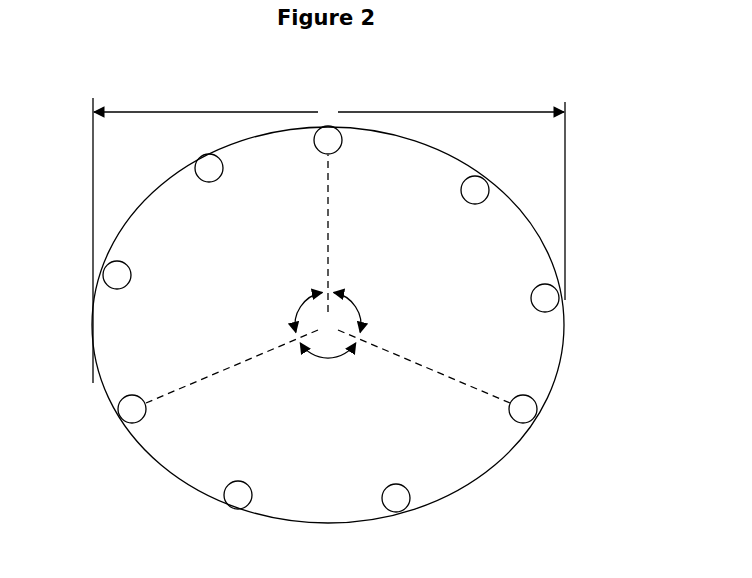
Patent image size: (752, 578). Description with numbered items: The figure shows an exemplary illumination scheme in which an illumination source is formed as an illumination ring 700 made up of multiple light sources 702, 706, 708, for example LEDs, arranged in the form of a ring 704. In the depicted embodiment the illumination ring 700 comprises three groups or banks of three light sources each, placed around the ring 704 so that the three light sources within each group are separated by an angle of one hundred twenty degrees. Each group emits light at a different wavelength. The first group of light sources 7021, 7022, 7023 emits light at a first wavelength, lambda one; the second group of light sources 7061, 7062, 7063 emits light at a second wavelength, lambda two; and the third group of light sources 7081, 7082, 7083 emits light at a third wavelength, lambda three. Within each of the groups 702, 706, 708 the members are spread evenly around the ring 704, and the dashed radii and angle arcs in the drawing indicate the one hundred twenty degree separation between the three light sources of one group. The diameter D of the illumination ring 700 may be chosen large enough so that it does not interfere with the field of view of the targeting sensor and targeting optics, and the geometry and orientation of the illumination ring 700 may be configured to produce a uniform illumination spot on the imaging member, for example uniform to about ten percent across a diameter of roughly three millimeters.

The illumination ring 700 is at (367, 64).
The light sources 702 is at (323, 274).
The first light source of the first group 7021 is at (341, 137).
The second light source of the first group 7022 is at (538, 408).
The third light source of the first group 7023 is at (119, 404).
The ring 704 is at (478, 478).
The light sources 706 is at (319, 346).
The first light source of the second group 7061 is at (479, 176).
The second light source of the second group 7062 is at (408, 504).
The third light source of the second group 7063 is at (128, 268).
The light sources 708 is at (377, 331).
The first light source of the third group 7081 is at (531, 290).
The second light source of the third group 7082 is at (252, 489).
The third light source of the third group 7083 is at (224, 172).